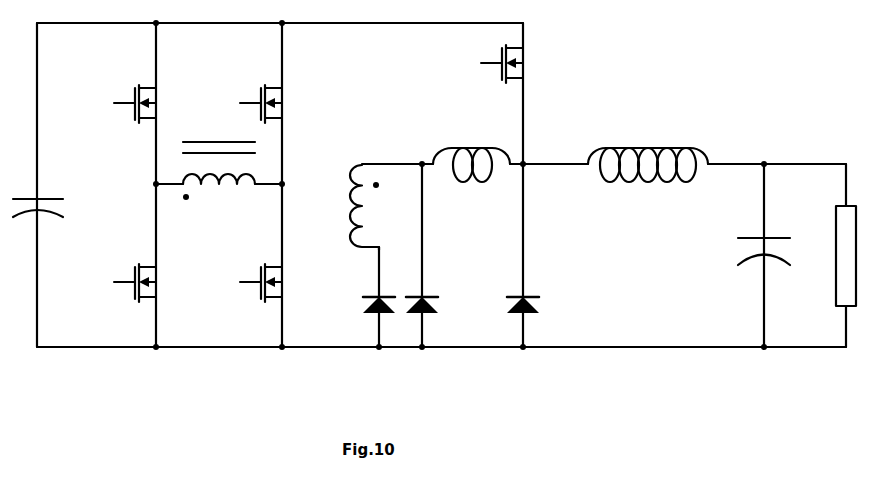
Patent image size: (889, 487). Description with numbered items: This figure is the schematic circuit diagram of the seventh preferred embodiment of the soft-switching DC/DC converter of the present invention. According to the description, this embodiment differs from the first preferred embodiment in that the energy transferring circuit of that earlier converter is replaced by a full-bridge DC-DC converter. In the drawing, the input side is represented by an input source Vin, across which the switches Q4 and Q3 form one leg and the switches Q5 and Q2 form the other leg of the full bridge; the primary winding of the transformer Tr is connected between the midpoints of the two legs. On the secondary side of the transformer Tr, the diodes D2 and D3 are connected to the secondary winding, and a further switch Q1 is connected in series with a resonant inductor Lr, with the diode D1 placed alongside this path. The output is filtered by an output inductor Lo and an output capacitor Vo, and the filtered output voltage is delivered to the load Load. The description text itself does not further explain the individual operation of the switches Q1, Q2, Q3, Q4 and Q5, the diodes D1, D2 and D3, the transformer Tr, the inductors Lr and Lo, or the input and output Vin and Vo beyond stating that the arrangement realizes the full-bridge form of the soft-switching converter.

The switch Q1 is at (487, 64).
The switch Q2 is at (247, 282).
The switch Q3 is at (119, 282).
The switch Q4 is at (125, 104).
The switch Q5 is at (250, 104).
The diode D1 is at (508, 301).
The diode D2 is at (364, 306).
The diode D3 is at (430, 293).
The transformer Tr is at (281, 215).
The resonant inductor Lr is at (471, 151).
The output inductor Lo is at (648, 152).
The input voltage source / capacitor Vin is at (48, 191).
The output voltage / capacitor Vo is at (745, 249).
The load Load is at (840, 289).